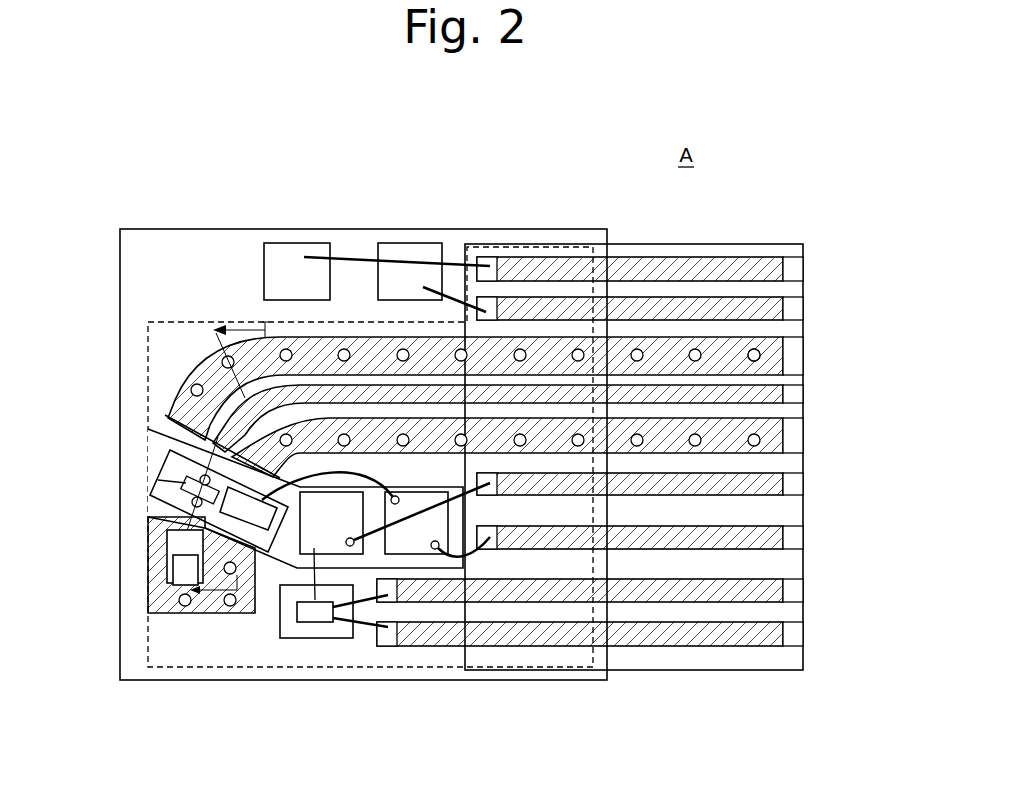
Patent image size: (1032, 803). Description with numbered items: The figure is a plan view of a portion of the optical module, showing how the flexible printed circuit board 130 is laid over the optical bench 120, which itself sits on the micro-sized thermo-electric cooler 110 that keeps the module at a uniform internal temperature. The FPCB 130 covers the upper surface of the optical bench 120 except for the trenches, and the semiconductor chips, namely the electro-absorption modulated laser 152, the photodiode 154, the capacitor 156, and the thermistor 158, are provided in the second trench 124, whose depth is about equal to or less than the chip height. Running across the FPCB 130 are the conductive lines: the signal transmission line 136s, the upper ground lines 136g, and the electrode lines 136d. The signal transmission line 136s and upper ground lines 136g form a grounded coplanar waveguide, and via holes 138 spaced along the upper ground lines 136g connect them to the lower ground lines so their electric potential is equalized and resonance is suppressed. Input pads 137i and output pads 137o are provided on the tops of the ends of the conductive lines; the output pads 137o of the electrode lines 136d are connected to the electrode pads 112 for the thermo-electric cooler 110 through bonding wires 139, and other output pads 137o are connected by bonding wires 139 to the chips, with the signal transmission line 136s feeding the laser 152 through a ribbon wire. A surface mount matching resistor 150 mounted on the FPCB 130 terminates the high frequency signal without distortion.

The Thermo-Electric Cooler 110 is at (237, 247).
The electrode pads 112 is at (403, 245).
The optical bench 120 is at (175, 322).
The second trench 124 is at (350, 628).
The Flexible Printed Circuit Board 130 is at (710, 672).
The electrode lines 136d is at (775, 305).
The upper ground lines 136g is at (778, 358).
The signal transmission line 136s is at (778, 395).
The input pads 137i is at (785, 268).
The output pads 137o is at (492, 263).
The via holes 138 is at (760, 350).
The bonding wires 139 is at (450, 262).
The matching resistor 150 is at (160, 555).
The Electro-absorption Modulated Laser 152 is at (168, 462).
The PhotoDiode 154 is at (280, 637).
The capacitor 156 is at (415, 548).
The thermistor 158 is at (317, 620).